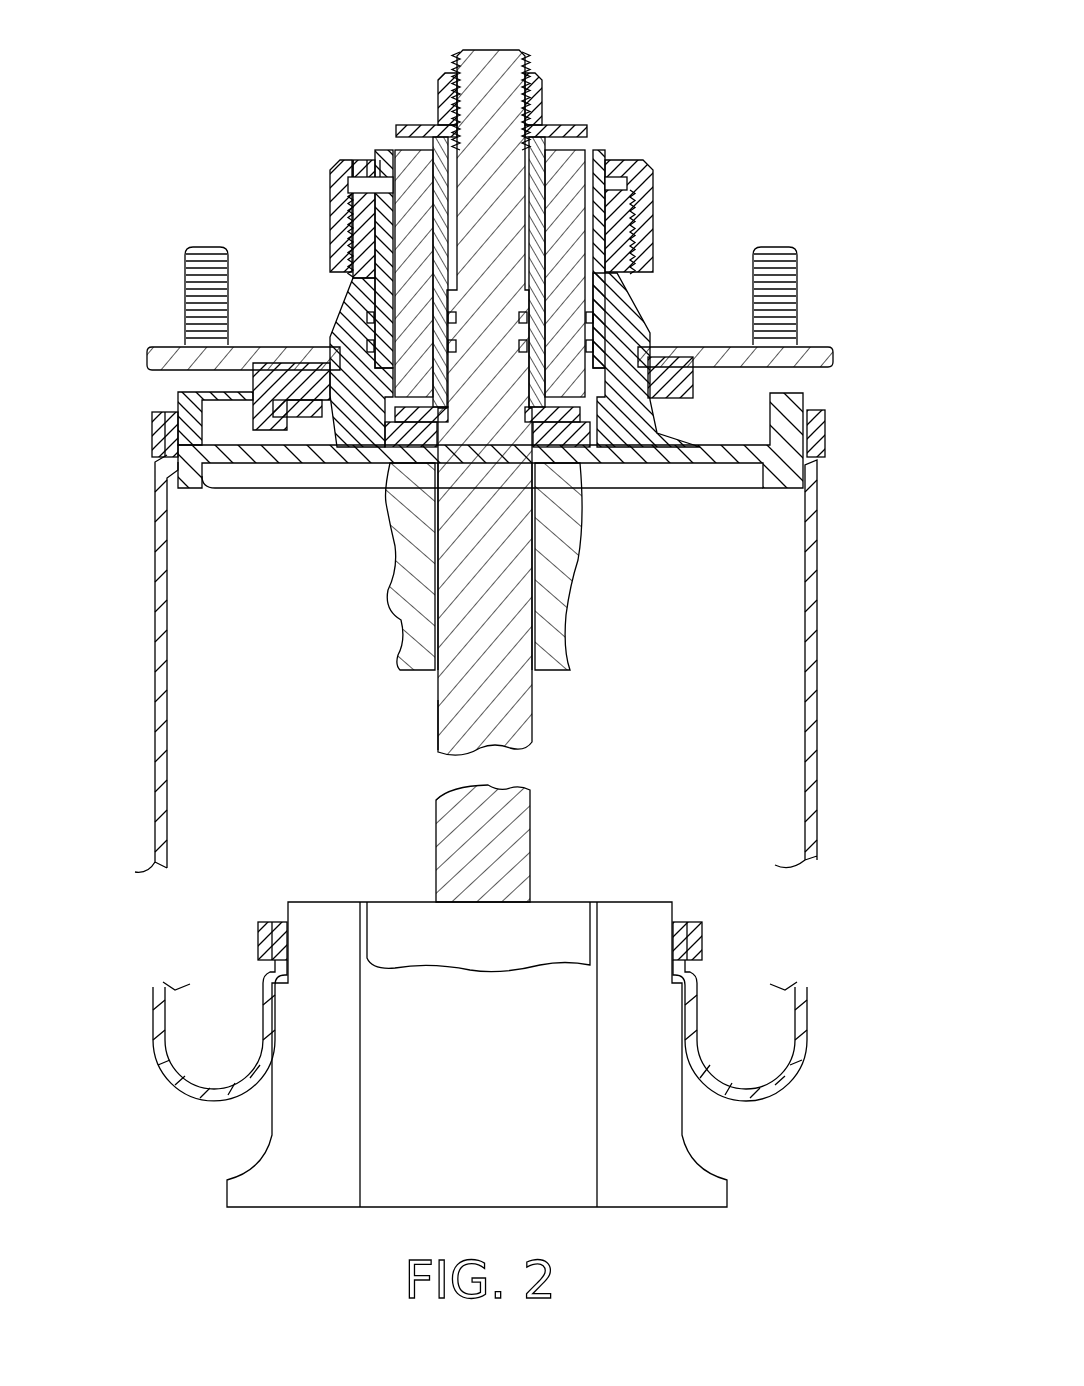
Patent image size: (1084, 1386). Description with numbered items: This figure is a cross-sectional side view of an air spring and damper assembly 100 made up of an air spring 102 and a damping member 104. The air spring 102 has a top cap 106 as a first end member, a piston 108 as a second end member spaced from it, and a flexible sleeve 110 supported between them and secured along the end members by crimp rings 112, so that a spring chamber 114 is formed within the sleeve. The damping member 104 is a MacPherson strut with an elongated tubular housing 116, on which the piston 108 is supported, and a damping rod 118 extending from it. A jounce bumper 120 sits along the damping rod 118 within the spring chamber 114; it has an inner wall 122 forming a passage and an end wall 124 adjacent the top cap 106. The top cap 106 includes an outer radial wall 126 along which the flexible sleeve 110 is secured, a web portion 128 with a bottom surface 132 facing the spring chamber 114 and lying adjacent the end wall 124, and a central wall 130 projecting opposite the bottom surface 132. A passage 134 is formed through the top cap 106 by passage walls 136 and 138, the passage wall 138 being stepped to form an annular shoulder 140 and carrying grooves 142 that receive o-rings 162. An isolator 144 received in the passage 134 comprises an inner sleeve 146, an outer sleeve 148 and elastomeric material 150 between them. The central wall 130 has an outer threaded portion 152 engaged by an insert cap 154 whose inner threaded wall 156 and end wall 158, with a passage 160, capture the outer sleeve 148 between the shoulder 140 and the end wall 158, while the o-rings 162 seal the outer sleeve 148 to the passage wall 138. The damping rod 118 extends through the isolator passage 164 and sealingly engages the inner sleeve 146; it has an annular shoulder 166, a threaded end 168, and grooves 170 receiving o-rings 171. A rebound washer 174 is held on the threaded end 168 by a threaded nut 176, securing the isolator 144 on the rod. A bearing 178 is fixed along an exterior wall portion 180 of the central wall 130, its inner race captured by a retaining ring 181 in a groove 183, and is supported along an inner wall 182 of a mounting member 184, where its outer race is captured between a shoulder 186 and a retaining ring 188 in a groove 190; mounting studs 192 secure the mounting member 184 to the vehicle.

The air spring and damper assembly 100 is at (135, 252).
The air spring 102 is at (848, 550).
The damping member 104 is at (582, 862).
The top cap 106 is at (247, 466).
The piston 108 is at (298, 1184).
The flexible sleeve 110 is at (822, 716).
The crimp rings 112 is at (150, 432).
The spring chamber 114 is at (660, 672).
The elongated tubular housing 116 is at (425, 925).
The damping rod 118 is at (430, 712).
The jounce bumper 120 is at (392, 632).
The inner wall 122 is at (576, 572).
The end wall 124 is at (395, 490).
The outer radial wall 126 is at (792, 437).
The web portion 128 is at (722, 472).
The central wall 130 is at (638, 318).
The bottom surface 132 is at (290, 490).
The passage 134 is at (590, 470).
The passage wall 136 is at (586, 520).
The passage wall 138 is at (352, 470).
The annular shoulder 140 is at (665, 368).
The grooves 142 is at (612, 322).
The isolator 144 is at (590, 150).
The inner sleeve 146 is at (352, 275).
The outer sleeve 148 is at (349, 185).
The elastomeric material 150 is at (388, 249).
The outer threaded portion 152 is at (630, 212).
The insert cap 154 is at (331, 163).
The inner threaded wall 156 is at (342, 222).
The end wall 158 is at (360, 160).
The passage 160 is at (388, 146).
The o-rings 162 is at (450, 345).
The isolator passage 164 is at (578, 158).
The annular shoulder 166 is at (520, 414).
The threaded end 168 is at (513, 48).
The grooves 170 is at (452, 372).
The o-rings 171 is at (452, 352).
The rebound washer 174 is at (420, 130).
The threaded nut 176 is at (447, 80).
The bearing 178 is at (740, 360).
The exterior wall portion 180 is at (380, 443).
The retaining ring 181 is at (300, 378).
The inner wall 182 is at (250, 384).
The groove 183 is at (366, 318).
The mounting member 184 is at (175, 332).
The shoulder 186 is at (170, 352).
The retaining ring 188 is at (815, 410).
The groove 190 is at (705, 372).
The mounting studs 192 is at (800, 265).